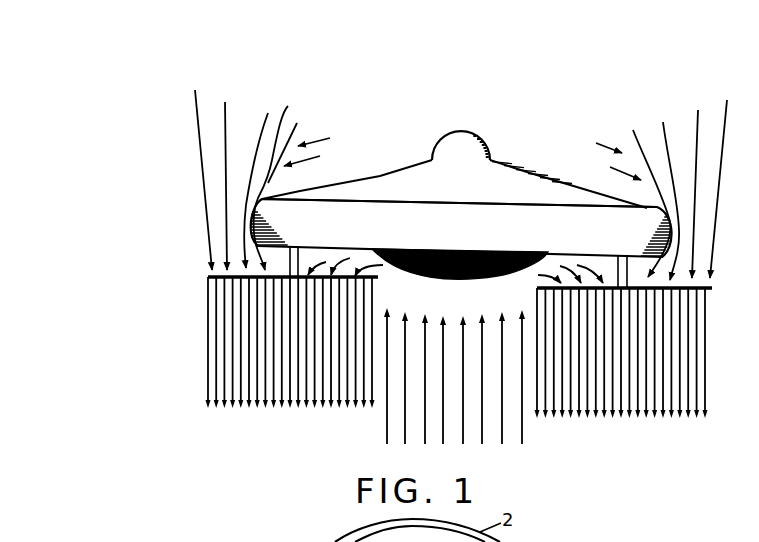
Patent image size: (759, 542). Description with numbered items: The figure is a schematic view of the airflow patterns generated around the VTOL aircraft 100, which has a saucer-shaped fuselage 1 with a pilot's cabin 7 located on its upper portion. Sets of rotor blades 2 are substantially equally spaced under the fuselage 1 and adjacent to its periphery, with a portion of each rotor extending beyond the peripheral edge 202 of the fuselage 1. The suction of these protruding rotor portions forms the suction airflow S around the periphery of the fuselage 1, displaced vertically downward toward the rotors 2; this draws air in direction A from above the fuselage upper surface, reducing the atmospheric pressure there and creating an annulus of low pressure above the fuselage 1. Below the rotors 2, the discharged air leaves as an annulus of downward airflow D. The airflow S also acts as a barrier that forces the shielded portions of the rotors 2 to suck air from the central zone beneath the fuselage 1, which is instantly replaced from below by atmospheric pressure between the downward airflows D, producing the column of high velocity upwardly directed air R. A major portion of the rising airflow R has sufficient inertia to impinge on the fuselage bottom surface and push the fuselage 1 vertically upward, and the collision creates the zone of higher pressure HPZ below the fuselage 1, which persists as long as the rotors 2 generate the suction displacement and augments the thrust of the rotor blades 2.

The fuselage 1 is at (370, 187).
The rotor blades 2 is at (211, 274).
The pilot's cabin 7 is at (470, 133).
The VTOL aircraft 100 is at (478, 197).
The peripheral edge 202 is at (288, 106).
The higher pressure zone HPZ is at (452, 248).
The suction airflow S is at (461, 179).
The airflow above fuselage A is at (462, 154).
The discharge airflow D is at (457, 365).
The upwardly directed air R is at (454, 393).